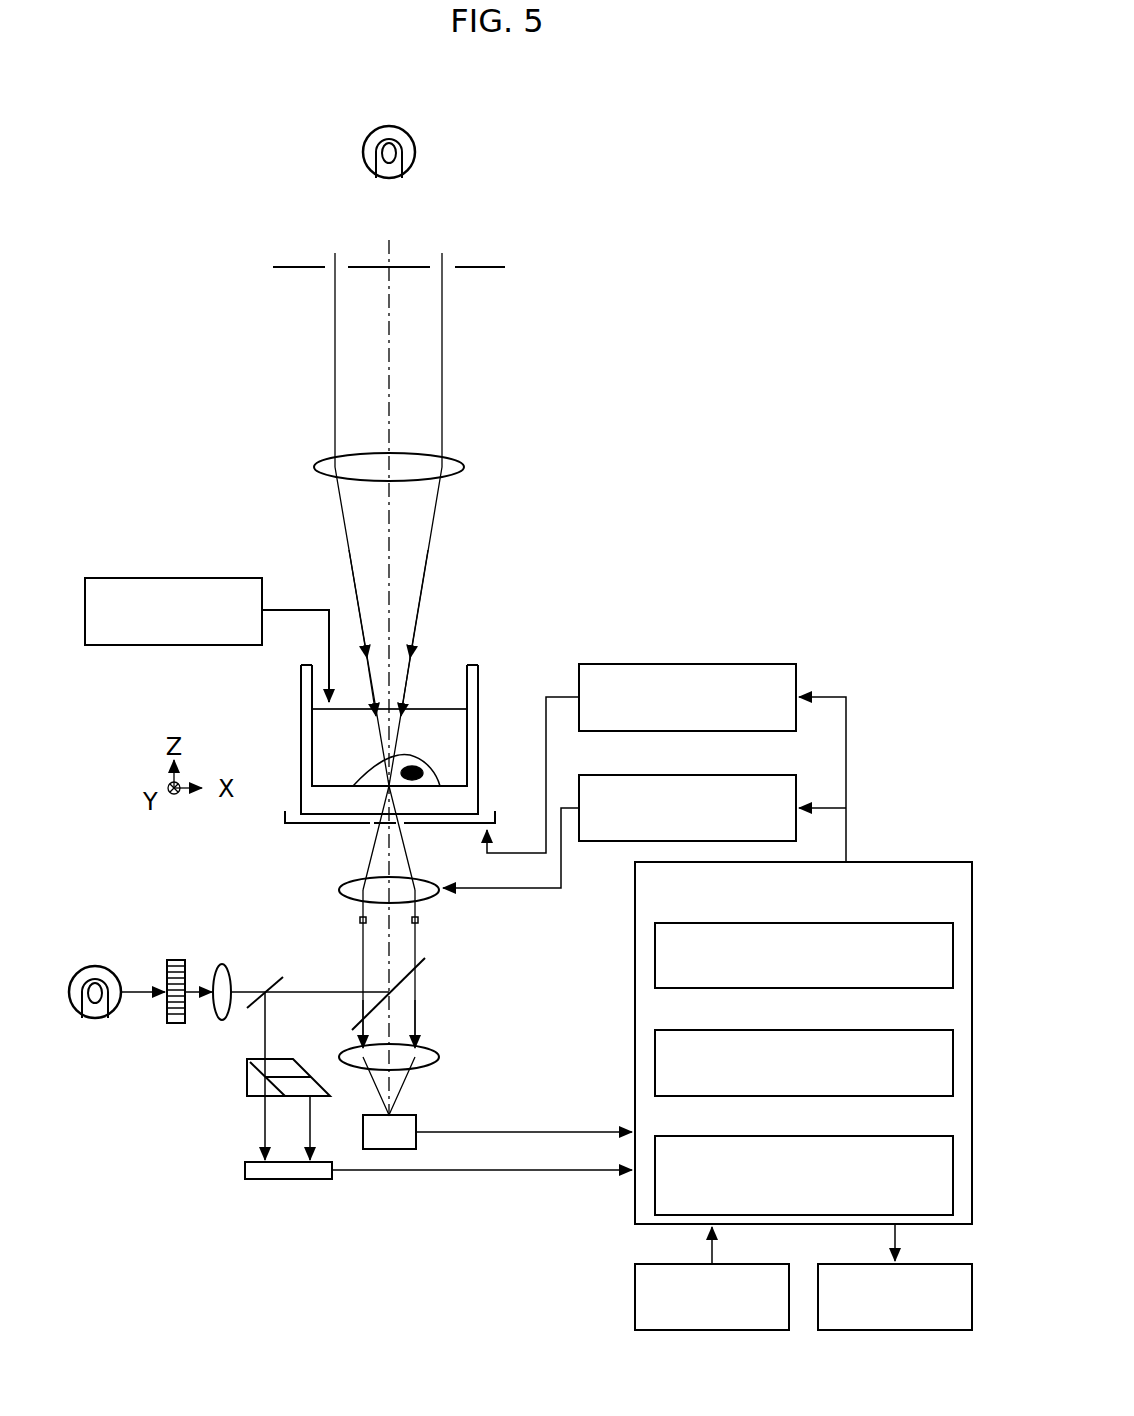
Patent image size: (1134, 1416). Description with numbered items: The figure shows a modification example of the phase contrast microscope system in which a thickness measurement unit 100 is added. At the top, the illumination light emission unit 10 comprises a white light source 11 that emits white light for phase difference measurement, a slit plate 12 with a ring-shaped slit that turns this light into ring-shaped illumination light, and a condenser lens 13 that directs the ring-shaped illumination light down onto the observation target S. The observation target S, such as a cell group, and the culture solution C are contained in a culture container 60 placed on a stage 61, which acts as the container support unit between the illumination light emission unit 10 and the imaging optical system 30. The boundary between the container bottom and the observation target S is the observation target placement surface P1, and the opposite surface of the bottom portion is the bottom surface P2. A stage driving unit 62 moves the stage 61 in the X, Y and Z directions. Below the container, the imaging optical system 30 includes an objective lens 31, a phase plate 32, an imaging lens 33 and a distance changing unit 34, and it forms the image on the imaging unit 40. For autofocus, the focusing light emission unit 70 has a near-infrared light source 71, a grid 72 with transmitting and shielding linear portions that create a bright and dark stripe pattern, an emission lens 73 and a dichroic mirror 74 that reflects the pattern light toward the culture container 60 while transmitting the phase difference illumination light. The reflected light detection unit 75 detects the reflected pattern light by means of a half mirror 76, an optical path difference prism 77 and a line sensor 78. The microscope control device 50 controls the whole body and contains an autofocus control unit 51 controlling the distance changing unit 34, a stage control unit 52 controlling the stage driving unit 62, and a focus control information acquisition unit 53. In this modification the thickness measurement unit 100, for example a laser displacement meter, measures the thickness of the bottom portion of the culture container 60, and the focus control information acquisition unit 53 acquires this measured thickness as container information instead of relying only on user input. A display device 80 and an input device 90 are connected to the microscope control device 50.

The illumination light emission unit 10 is at (254, 262).
The white light source 11 is at (416, 150).
The slit plate 12 is at (500, 265).
The condenser lens 13 is at (465, 467).
The imaging optical system 30 is at (273, 906).
The objective lens 31 is at (338, 890).
The phase plate 32 is at (358, 920).
The imaging lens 33 is at (440, 1057).
The distance changing unit 34 is at (757, 775).
The imaging unit 40 is at (423, 1115).
The microscope control device 50 is at (930, 862).
The autofocus control unit 51 is at (912, 923).
The stage control unit 52 is at (912, 1030).
The focus control information acquisition unit 53 is at (912, 1136).
The culture container 60 is at (300, 712).
The stage 61 is at (442, 828).
The stage driving unit 62 is at (757, 664).
The focusing light emission unit 70 is at (168, 1008).
The near-infrared light source 71 is at (98, 965).
The grid 72 is at (169, 960).
The emission lens 73 is at (231, 978).
The dichroic mirror 74 is at (426, 963).
The reflected light detection unit 75 is at (405, 1082).
The half mirror 76 is at (282, 978).
The optical path difference prism 77 is at (289, 1057).
The line sensor 78 is at (303, 1180).
The display device 80 is at (930, 1264).
The input device 90 is at (746, 1264).
The thickness measurement unit 100 is at (244, 578).
The culture solution C is at (455, 712).
The observation target S is at (428, 780).
The observation target placement surface P1 is at (328, 792).
The bottom surface P2 is at (350, 820).